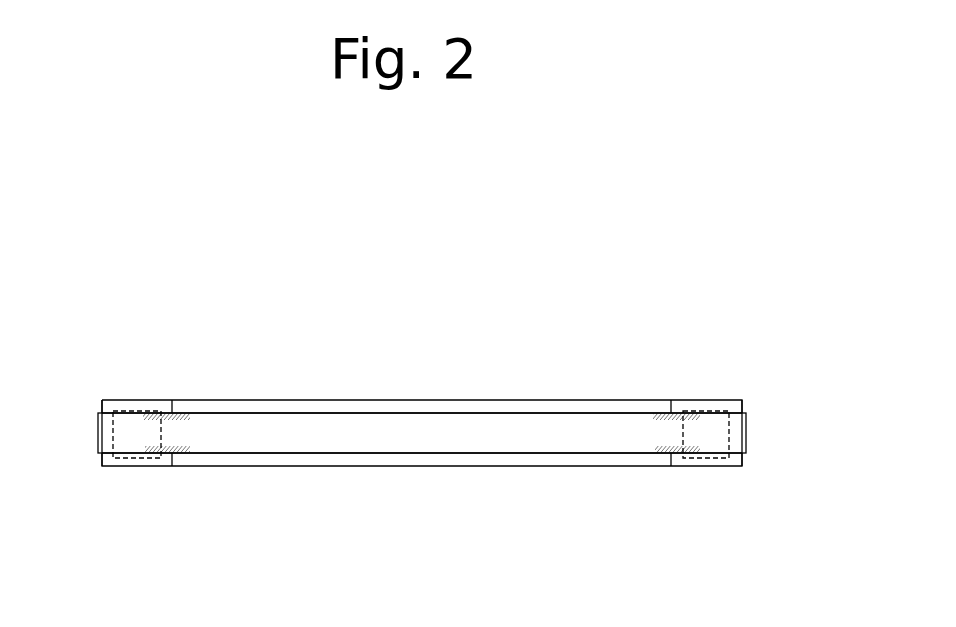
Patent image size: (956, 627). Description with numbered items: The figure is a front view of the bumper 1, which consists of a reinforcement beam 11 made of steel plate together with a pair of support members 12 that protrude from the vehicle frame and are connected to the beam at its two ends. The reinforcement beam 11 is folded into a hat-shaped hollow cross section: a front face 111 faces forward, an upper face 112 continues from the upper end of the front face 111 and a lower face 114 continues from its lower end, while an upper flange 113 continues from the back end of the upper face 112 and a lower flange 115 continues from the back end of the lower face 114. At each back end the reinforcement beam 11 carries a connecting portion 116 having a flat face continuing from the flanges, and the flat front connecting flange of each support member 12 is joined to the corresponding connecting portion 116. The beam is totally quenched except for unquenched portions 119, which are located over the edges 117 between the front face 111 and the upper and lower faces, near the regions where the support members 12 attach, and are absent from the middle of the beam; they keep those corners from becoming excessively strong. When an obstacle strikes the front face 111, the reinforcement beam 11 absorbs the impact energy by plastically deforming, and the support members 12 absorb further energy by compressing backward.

The bumper 1 is at (422, 445).
The reinforcement beam 11 is at (306, 412).
The front face 111 is at (370, 418).
The upper face 112 is at (447, 413).
The upper flange 113 is at (518, 406).
The lower face 114 is at (488, 453).
The lower flange 115 is at (545, 458).
The connecting portion 116 is at (139, 477).
The edge 117 is at (236, 413).
The unquenched portion 119 is at (175, 413).
The support member 12 is at (100, 438).